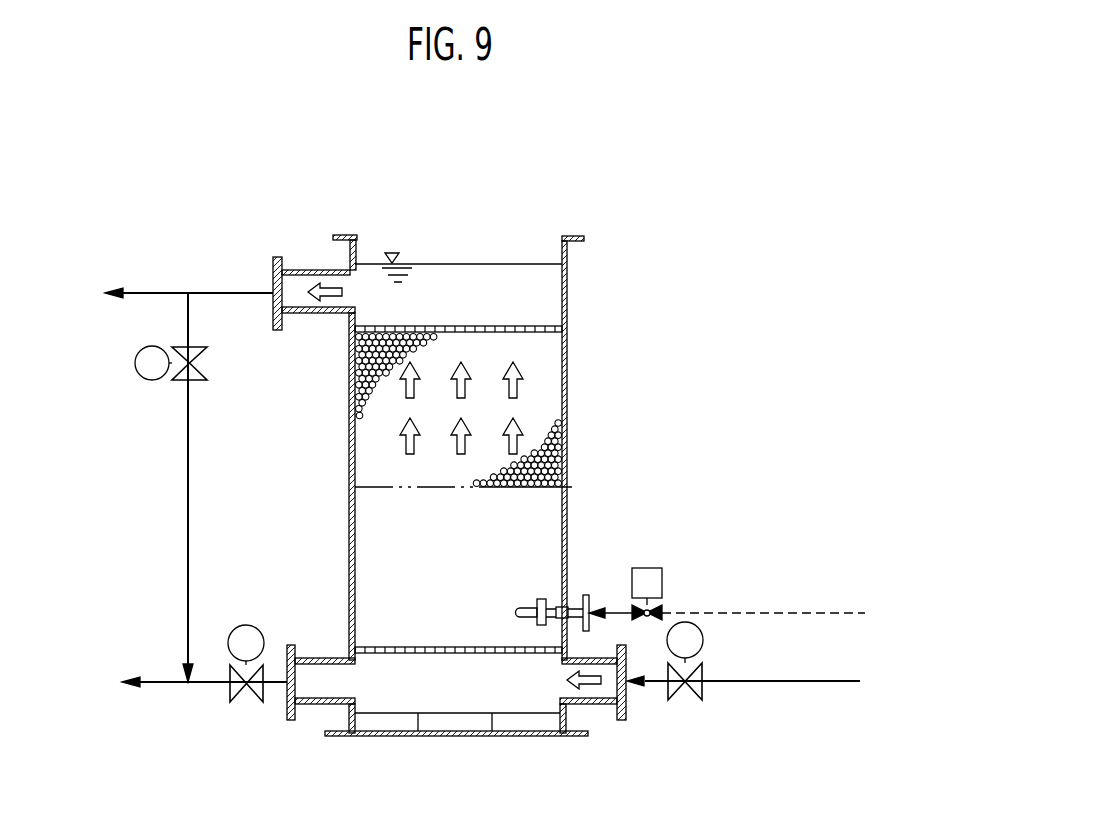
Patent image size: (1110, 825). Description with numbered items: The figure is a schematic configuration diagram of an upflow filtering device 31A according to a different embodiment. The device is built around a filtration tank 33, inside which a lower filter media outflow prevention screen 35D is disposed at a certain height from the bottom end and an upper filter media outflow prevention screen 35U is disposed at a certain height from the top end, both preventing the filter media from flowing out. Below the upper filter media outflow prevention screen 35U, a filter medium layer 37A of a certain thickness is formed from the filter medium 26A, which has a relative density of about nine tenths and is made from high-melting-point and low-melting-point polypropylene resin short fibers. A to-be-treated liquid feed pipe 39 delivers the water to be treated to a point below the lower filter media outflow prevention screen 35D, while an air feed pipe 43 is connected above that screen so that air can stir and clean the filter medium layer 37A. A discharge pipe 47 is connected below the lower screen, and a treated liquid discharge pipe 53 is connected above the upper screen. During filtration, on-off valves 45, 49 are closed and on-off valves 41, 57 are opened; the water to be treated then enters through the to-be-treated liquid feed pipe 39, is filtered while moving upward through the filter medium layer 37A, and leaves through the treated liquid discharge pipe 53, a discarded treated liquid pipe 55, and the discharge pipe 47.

The upflow filtering device 31A is at (610, 223).
The filtration tank 33 is at (567, 403).
The upper filter media outflow prevention screen 35U is at (537, 327).
The lower filter media outflow prevention screen 35D is at (392, 645).
The filter medium layer 37A is at (355, 385).
The filter medium 26A is at (370, 452).
The to-be-treated liquid feed pipe 39 is at (777, 682).
The on-off valve 41 is at (690, 700).
The air feed pipe 43 is at (803, 610).
The on-off valve 45 is at (651, 568).
The discharge pipe 47 is at (158, 690).
The on-off valve 49 is at (250, 705).
The treated liquid discharge pipe 53 is at (162, 290).
The discarded treated liquid pipe 55 is at (187, 548).
The on-off valve 57 is at (152, 385).